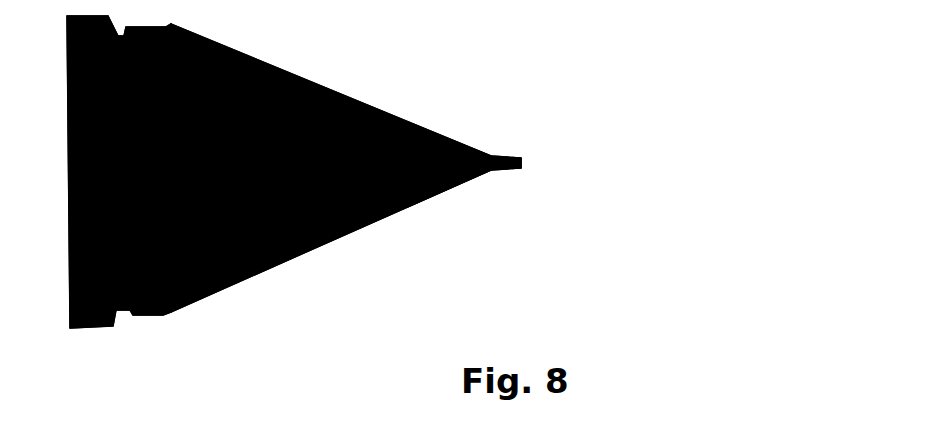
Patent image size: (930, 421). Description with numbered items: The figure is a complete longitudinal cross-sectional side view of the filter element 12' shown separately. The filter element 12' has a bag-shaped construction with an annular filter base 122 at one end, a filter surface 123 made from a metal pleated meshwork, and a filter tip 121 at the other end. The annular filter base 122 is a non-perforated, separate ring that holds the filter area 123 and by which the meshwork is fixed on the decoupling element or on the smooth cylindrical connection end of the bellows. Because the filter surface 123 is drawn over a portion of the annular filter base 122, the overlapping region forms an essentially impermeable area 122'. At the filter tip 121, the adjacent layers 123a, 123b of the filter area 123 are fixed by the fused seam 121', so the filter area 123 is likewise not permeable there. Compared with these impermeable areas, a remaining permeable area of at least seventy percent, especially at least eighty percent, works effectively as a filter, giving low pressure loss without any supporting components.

The filter element 12' is at (294, 194).
The annular filter base 122 is at (80, 202).
The impermeable area 122' is at (148, 202).
The filter surface 123 is at (280, 252).
The layer of the filter area 123a is at (484, 148).
The layer of the filter area 123b is at (495, 162).
The filter tip 121 is at (558, 204).
The fused seam 121' is at (549, 125).